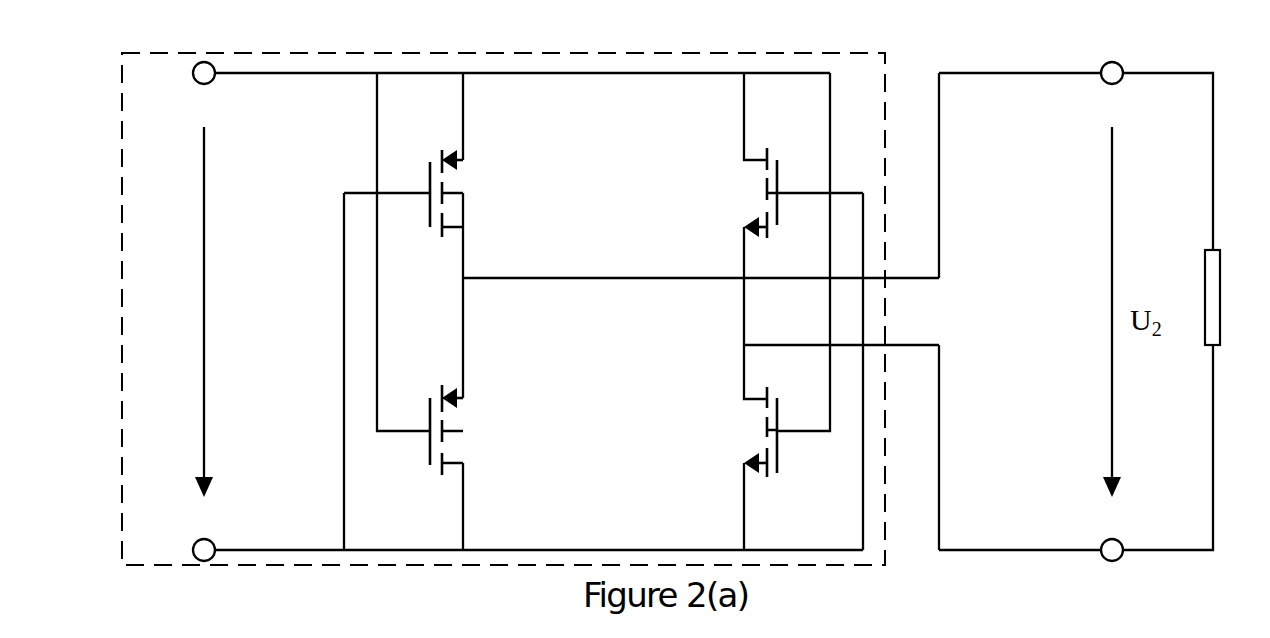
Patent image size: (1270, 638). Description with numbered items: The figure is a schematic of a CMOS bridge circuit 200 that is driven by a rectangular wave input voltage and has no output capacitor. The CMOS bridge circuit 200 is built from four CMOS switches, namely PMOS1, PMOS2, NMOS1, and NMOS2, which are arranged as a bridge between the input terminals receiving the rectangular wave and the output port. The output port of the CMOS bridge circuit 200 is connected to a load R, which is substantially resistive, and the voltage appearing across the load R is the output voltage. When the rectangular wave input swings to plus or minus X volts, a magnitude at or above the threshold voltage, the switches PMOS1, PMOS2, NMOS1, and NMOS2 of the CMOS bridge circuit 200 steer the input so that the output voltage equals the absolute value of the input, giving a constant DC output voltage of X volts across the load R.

The CMOS bridge circuit 200 is at (906, 64).
The CMOS switch PMOS1 is at (517, 193).
The CMOS switch PMOS2 is at (517, 430).
The CMOS switch NMOS1 is at (710, 193).
The CMOS switch NMOS2 is at (710, 432).
The load R is at (1199, 297).